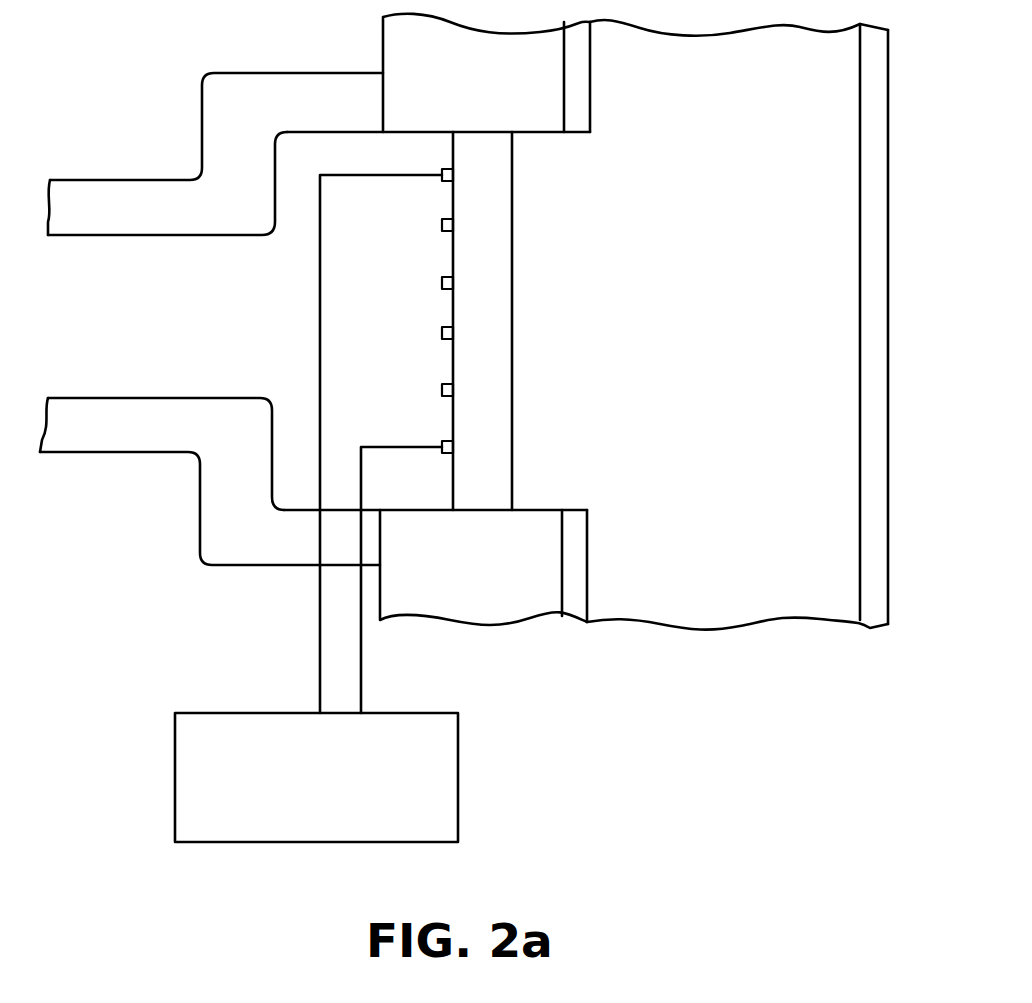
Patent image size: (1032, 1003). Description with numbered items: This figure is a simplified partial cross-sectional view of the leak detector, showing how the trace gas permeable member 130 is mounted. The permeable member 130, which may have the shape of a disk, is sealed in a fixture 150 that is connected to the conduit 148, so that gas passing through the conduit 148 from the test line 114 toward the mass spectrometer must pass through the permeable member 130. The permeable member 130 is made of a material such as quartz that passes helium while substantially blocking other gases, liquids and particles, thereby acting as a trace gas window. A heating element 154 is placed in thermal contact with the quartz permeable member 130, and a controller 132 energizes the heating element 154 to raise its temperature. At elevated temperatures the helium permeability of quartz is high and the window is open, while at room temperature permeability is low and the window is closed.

The test line 114 is at (889, 176).
The trace gas permeable member 130 is at (512, 222).
The controller 132 is at (250, 712).
The conduit 148 is at (126, 180).
The fixture 150 is at (398, 48).
The heating element 154 is at (442, 282).